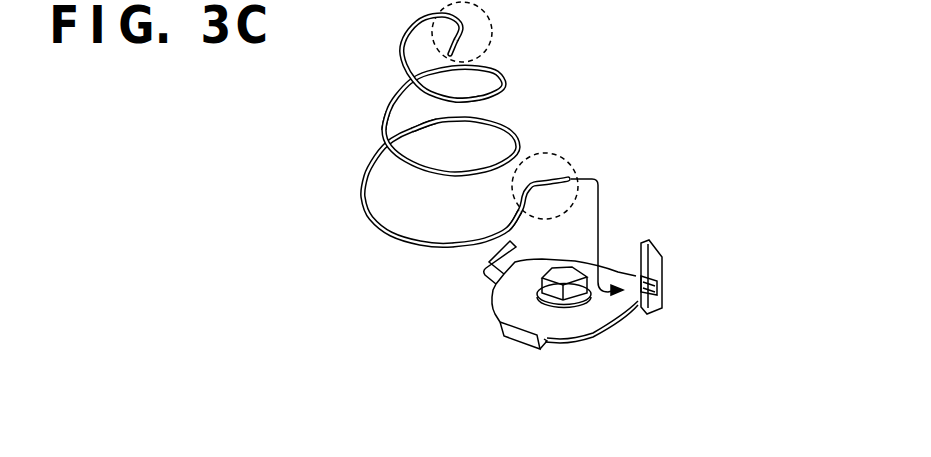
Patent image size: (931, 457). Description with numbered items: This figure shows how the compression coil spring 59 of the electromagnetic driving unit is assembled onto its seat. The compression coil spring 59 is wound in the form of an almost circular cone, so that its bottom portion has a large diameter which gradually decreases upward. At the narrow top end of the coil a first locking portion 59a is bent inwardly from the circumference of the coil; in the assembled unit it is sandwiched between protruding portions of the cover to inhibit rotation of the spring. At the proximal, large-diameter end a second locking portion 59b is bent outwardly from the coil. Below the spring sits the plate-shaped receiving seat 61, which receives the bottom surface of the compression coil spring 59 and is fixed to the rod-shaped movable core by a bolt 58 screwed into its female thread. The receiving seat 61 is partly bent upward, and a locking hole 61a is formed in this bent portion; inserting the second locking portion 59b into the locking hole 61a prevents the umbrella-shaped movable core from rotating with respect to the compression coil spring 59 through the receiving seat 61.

The bolt 58 is at (571, 286).
The compression coil spring 59 is at (413, 241).
The first locking portion 59a is at (491, 42).
The second locking portion 59b is at (546, 150).
The receiving seat 61 is at (623, 331).
The locking hole 61a is at (663, 308).